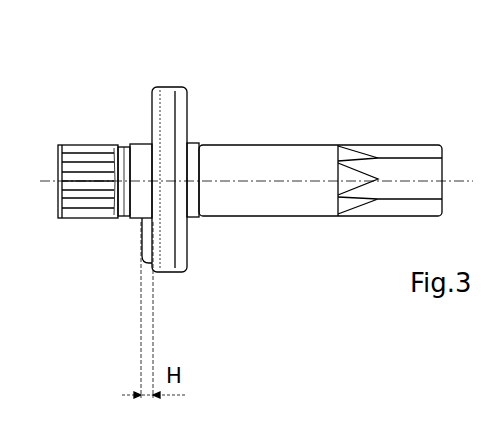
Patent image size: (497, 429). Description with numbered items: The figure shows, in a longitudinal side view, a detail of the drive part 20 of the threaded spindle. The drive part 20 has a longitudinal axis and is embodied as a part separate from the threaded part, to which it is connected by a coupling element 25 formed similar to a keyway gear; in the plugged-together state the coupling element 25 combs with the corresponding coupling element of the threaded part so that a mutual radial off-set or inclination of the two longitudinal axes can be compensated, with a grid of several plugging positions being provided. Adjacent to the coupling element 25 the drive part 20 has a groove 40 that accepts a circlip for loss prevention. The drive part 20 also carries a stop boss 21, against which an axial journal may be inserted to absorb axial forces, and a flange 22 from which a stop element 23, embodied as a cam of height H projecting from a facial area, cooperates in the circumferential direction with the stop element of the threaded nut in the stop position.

The drive part 20 is at (316, 108).
The stop boss 21 is at (170, 240).
The flange 22 is at (152, 108).
The stop element 23 is at (140, 243).
The coupling element 25 is at (65, 208).
The groove 40 is at (128, 143).